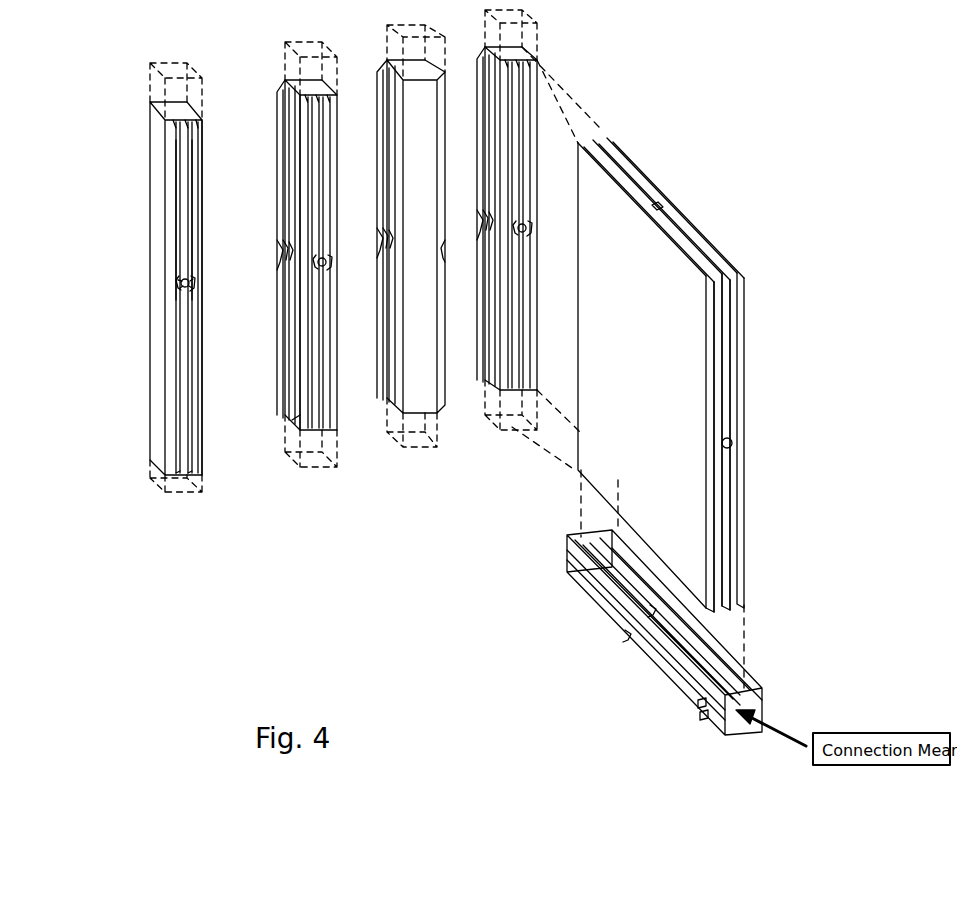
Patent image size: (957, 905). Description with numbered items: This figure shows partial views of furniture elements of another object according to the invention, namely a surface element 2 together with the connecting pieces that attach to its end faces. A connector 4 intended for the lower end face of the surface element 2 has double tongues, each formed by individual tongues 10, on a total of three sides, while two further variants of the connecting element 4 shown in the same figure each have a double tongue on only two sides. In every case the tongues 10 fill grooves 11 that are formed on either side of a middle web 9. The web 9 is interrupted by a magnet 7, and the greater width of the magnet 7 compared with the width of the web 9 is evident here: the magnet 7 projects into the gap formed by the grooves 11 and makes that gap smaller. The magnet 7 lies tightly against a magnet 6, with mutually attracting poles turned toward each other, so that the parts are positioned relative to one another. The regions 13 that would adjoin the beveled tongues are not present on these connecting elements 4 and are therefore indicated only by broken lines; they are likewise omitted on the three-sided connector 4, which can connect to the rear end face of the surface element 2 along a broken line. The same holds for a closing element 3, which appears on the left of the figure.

The surface element 2 is at (685, 296).
The closing element 3 is at (158, 423).
The connector 4 is at (300, 420).
The magnet 6 is at (180, 283).
The magnet 7 is at (732, 443).
The middle web 9 is at (727, 412).
The tongue 10 is at (195, 178).
The groove 11 is at (733, 350).
The region 13 is at (165, 86).